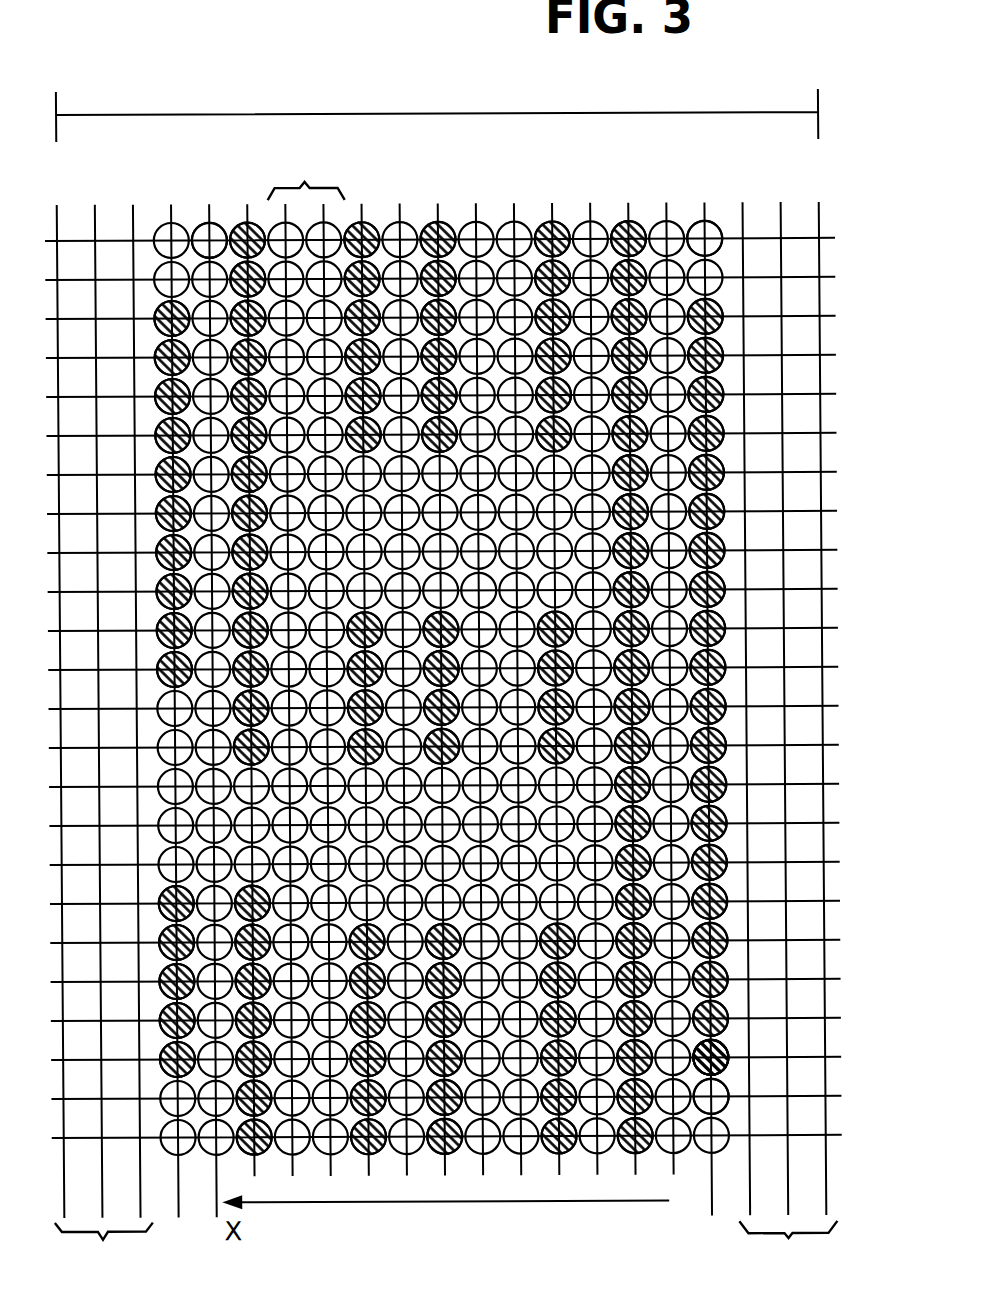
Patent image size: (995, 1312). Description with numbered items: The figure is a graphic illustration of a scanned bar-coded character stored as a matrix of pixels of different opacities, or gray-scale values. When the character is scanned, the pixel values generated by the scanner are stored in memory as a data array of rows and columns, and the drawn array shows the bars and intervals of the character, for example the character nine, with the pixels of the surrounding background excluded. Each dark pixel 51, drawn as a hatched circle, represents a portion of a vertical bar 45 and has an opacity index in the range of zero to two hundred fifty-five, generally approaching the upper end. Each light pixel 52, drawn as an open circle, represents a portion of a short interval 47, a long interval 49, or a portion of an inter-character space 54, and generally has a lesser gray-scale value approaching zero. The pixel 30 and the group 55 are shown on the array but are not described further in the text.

The display pixel element 30 is at (730, 1043).
The vertical bar 45 is at (711, 221).
The short interval 47 is at (203, 222).
The long interval 49 is at (305, 183).
The dark pixel 51 is at (727, 1067).
The light pixel 52 is at (718, 1103).
The inter-character space 54 is at (787, 1238).
The left group of column lines 55 is at (103, 1241).